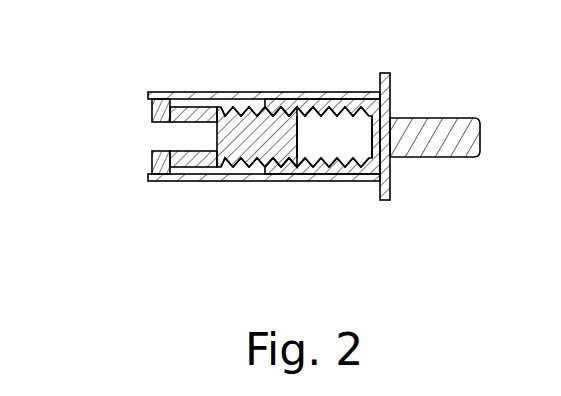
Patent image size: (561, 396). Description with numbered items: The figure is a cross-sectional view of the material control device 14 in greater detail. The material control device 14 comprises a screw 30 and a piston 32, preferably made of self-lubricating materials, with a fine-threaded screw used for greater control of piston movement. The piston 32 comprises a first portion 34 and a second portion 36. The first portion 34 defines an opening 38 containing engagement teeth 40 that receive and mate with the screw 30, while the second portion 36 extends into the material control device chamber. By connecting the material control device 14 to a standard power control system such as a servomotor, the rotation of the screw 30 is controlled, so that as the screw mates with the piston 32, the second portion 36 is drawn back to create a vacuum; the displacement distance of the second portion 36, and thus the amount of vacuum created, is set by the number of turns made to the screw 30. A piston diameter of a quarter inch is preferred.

The material control device 14 is at (259, 117).
The screw 30 is at (236, 108).
The piston 32 is at (400, 103).
The first portion 34 is at (373, 166).
The second portion 36 is at (438, 157).
The opening 38 is at (309, 138).
The engagement teeth 40 is at (312, 152).